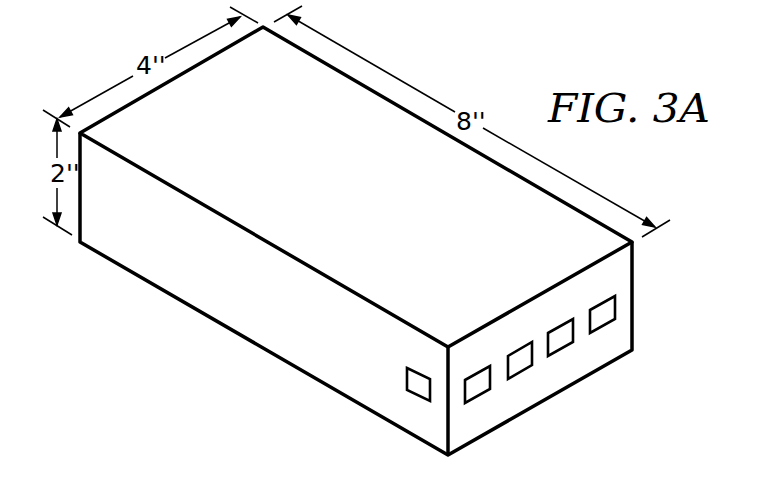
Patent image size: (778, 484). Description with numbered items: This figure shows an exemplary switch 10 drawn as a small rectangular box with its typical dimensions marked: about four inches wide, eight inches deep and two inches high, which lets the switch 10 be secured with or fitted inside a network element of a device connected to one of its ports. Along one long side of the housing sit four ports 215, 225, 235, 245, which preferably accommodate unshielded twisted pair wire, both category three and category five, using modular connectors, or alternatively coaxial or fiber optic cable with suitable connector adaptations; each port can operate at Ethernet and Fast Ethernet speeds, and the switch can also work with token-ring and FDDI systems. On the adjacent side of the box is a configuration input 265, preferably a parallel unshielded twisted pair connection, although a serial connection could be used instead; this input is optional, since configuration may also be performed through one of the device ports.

The switch 10 is at (263, 349).
The port 215 is at (478, 369).
The port 225 is at (521, 345).
The port 235 is at (562, 321).
The port 245 is at (603, 298).
The configuration input 265 is at (407, 375).